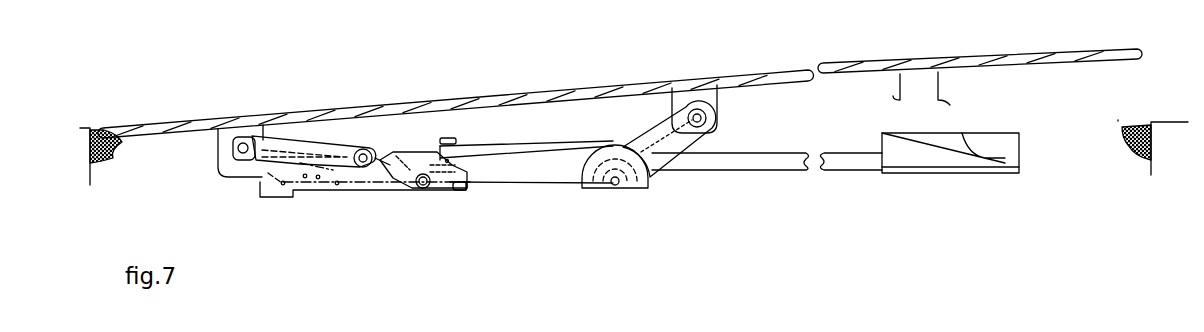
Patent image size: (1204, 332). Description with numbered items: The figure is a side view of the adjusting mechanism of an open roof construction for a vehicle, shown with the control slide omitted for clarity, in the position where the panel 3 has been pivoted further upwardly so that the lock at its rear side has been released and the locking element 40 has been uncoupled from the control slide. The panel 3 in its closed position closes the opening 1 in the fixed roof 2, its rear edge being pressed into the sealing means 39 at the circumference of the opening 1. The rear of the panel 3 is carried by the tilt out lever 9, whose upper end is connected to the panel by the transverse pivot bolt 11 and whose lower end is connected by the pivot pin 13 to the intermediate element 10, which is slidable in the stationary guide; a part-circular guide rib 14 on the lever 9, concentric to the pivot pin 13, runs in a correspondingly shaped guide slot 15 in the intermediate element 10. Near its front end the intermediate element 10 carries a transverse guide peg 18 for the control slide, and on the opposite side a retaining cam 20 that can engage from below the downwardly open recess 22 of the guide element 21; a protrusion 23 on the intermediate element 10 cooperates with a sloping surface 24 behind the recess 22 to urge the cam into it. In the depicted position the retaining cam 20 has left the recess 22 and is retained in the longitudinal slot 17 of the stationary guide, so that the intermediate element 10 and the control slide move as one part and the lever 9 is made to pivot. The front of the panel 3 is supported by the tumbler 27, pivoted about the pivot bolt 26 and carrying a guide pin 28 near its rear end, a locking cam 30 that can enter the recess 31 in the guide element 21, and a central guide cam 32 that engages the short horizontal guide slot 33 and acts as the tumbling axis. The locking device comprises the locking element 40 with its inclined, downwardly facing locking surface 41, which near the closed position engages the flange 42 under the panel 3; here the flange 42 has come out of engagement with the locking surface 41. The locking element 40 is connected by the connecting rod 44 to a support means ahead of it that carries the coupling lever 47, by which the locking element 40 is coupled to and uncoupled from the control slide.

The opening 1 is at (1117, 120).
The fixed roof 2 is at (80, 140).
The panel 3 is at (977, 62).
The tilt out lever 9 is at (660, 162).
The intermediate element 10 is at (530, 186).
The pivot bolt 11 is at (700, 121).
The pivot pin 13 is at (615, 186).
The guide rib 14 is at (642, 180).
The guide slot 15 is at (592, 186).
The longitudinal slot 17 is at (404, 190).
The guide peg 18 is at (424, 186).
The retaining cam 20 is at (441, 188).
The guide element 21 is at (263, 199).
The recess 22 is at (402, 160).
The protrusion 23 is at (435, 150).
The sloping surface 24 is at (424, 158).
The pivot bolt 26 is at (231, 148).
The tumbler 27 is at (221, 174).
The guide pin 28 is at (363, 153).
The locking cam 30 is at (357, 157).
The recess 31 is at (379, 156).
The guide cam 32 is at (306, 180).
The guide slot 33 is at (319, 182).
The sealing means 39 is at (113, 152).
The locking element 40 is at (993, 178).
The locking surface 41 is at (973, 148).
The flange 42 is at (917, 100).
The connecting rod 44 is at (840, 163).
The coupling lever 47 is at (517, 143).